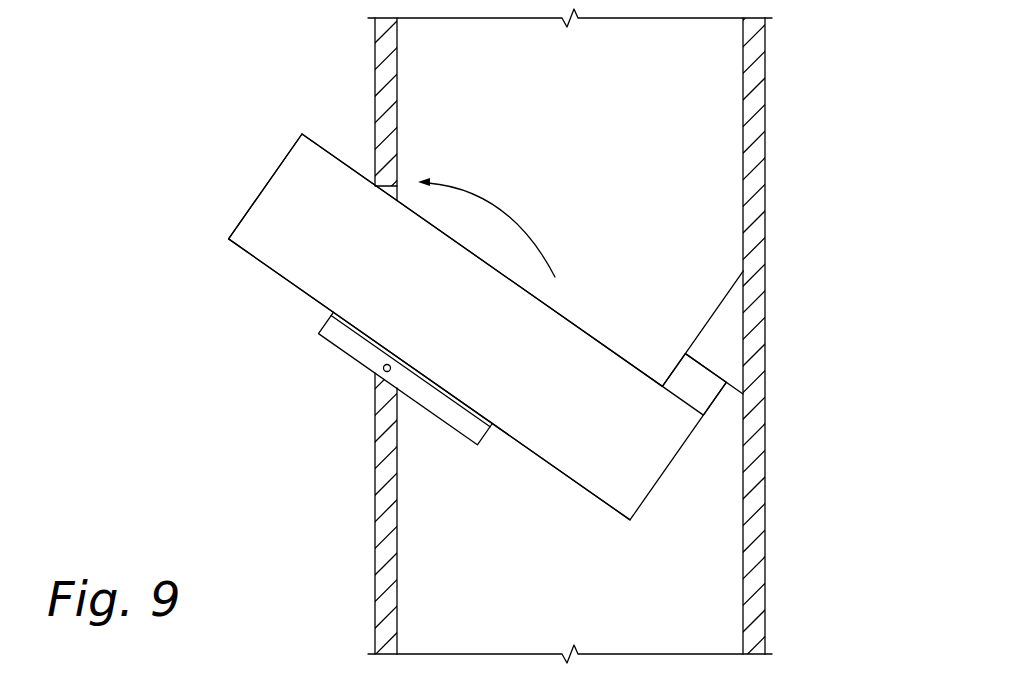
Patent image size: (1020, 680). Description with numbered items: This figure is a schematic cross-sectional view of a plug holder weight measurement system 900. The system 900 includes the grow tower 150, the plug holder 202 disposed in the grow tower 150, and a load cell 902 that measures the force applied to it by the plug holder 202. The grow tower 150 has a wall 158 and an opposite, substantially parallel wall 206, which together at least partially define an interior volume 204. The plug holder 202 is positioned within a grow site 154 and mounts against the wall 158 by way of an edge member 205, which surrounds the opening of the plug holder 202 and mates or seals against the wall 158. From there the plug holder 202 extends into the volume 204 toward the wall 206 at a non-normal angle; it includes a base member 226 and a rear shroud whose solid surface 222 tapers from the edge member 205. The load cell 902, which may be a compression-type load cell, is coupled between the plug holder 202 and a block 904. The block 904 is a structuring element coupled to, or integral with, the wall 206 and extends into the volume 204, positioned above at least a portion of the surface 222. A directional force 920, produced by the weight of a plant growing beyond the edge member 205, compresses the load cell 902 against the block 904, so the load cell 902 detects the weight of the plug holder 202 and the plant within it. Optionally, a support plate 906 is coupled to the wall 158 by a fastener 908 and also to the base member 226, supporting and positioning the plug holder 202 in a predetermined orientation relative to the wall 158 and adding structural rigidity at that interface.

The grow tower 150 is at (790, 214).
The grow site 154 is at (265, 292).
The wall 158 is at (375, 579).
The plug holder 202 is at (486, 343).
The interior volume 204 is at (551, 101).
The edge member 205 is at (268, 183).
The wall 206 is at (743, 88).
The surface 222 is at (576, 322).
The base member 226 is at (595, 497).
The plug holder weight measurement system 900 is at (182, 498).
The load cell 902 is at (676, 366).
The block 904 is at (720, 303).
The support plate 906 is at (462, 426).
The fastener 908 is at (383, 369).
The directional force 920 is at (495, 208).